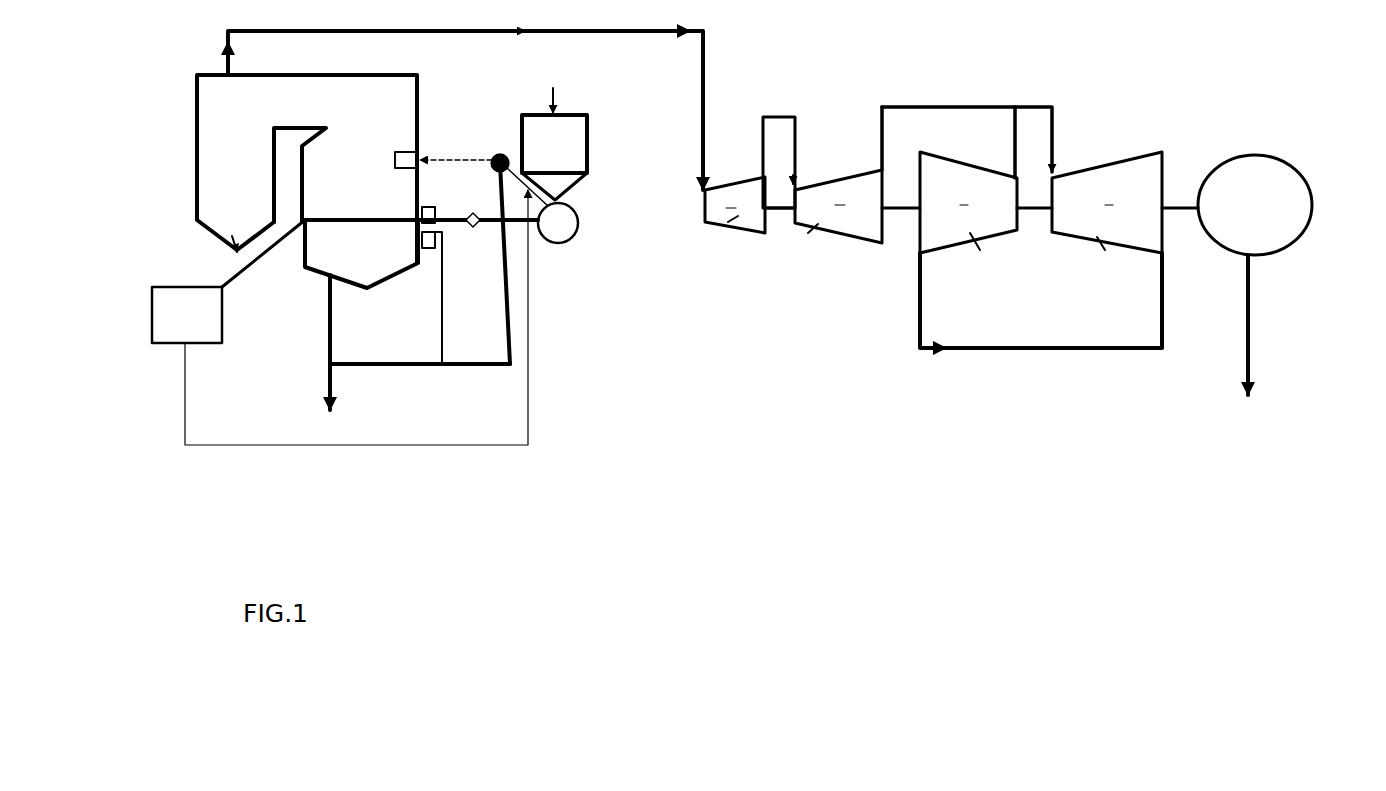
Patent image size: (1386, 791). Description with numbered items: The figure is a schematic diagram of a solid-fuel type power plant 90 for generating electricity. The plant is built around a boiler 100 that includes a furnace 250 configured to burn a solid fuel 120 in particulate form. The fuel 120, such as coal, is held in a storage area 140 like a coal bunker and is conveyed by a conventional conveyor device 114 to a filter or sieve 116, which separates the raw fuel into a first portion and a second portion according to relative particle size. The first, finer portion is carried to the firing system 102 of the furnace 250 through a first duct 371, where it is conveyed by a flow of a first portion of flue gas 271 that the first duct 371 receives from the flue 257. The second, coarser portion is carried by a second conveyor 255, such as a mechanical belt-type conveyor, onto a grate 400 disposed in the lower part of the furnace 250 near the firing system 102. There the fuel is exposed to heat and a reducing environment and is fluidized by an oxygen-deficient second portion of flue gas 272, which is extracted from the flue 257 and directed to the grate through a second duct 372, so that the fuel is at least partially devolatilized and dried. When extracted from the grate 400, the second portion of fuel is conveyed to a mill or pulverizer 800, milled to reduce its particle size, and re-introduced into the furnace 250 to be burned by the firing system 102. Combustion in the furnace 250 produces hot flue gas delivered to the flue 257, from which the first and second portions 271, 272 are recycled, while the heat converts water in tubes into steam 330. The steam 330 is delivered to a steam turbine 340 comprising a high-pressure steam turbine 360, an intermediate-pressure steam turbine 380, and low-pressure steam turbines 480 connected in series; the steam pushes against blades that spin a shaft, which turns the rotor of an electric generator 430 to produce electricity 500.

The power plant 90 is at (788, 46).
The boiler 100 is at (194, 76).
The firing system 102 is at (398, 151).
The conveyor device 114 is at (558, 204).
The sieve 116 is at (578, 225).
The solid fuel 120 is at (566, 98).
The storage area 140 is at (568, 158).
The furnace 250 is at (372, 192).
The second conveyor 255 is at (466, 216).
The flue 257 is at (328, 315).
The first portion of flue gas 271 is at (510, 325).
The second portion of flue gas 272 is at (438, 293).
The steam 330 is at (522, 27).
The steam turbine 340 is at (1108, 100).
The high-pressure steam turbine 360 is at (731, 225).
The first duct 371 is at (450, 158).
The second duct 372 is at (441, 326).
The intermediate-pressure steam turbine 380 is at (834, 224).
The grate 400 is at (392, 226).
The electric generator 430 is at (1266, 172).
The low-pressure steam turbines 480 is at (1041, 250).
The electricity 500 is at (1254, 305).
The pulverizer 800 is at (210, 324).